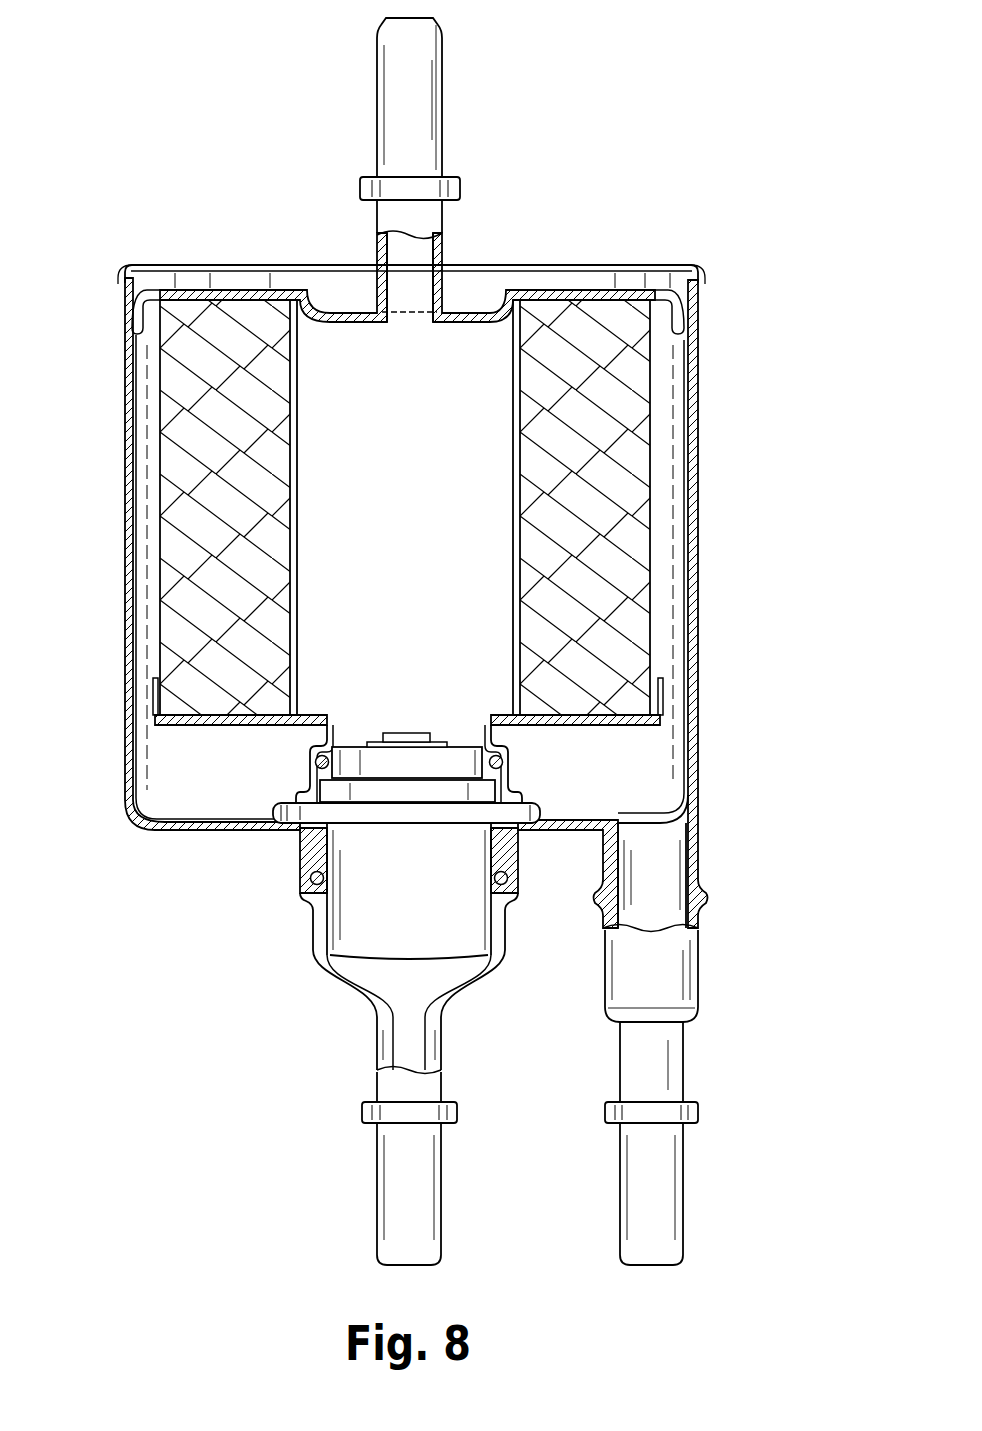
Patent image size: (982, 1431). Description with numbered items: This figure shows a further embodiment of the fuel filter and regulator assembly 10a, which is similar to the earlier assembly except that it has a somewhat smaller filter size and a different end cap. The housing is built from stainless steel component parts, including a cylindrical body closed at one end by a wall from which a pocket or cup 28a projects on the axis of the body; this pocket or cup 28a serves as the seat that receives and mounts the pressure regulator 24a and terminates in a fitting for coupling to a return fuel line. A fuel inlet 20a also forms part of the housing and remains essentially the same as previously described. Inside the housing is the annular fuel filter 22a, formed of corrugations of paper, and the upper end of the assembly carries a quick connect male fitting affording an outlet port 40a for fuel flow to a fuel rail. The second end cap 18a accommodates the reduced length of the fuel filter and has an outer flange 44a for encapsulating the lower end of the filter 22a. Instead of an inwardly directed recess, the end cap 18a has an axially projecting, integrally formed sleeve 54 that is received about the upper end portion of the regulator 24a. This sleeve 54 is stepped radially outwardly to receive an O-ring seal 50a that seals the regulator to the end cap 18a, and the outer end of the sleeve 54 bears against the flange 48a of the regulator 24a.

The fuel filter and regulator assembly 10a is at (752, 317).
The outlet port 40a is at (372, 118).
The fuel filter 22a is at (630, 517).
The outer flange 44a is at (145, 702).
The second end cap 18a is at (608, 729).
The pressure regulator 24a is at (360, 918).
The pocket or cup 28a is at (333, 984).
The flange of the regulator 48a is at (272, 822).
The O-ring seal 50a is at (507, 762).
The sleeve 54 is at (312, 777).
The fuel inlet 20a is at (688, 1070).